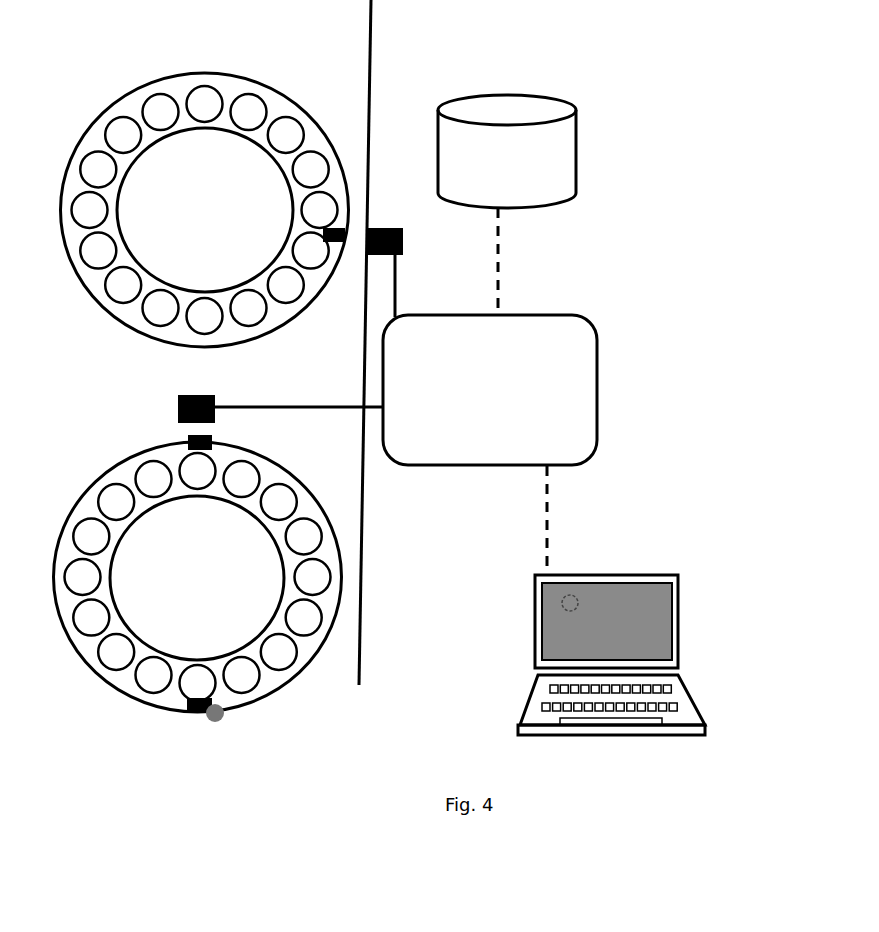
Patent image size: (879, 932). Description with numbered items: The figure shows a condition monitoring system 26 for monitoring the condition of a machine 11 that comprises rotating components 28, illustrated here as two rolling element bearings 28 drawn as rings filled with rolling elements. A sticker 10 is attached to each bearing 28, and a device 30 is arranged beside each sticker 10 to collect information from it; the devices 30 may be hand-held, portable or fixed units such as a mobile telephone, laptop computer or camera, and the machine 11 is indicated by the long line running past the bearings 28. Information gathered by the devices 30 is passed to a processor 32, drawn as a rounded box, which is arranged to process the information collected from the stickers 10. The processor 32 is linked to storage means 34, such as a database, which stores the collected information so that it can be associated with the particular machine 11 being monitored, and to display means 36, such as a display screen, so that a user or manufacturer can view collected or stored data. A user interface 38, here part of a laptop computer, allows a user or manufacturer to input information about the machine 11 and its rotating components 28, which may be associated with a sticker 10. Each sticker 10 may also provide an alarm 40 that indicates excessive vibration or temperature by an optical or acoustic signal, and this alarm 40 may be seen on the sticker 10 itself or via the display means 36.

The sticker 10 is at (342, 227).
The machine 11 is at (372, 63).
The condition monitoring system 26 is at (667, 207).
The rotating component 28 is at (147, 83).
The device 30 is at (403, 238).
The processor 32 is at (597, 352).
The storage means 34 is at (565, 107).
The display means 36 is at (648, 623).
The user interface 38 is at (688, 722).
The alarm 40 is at (225, 720).